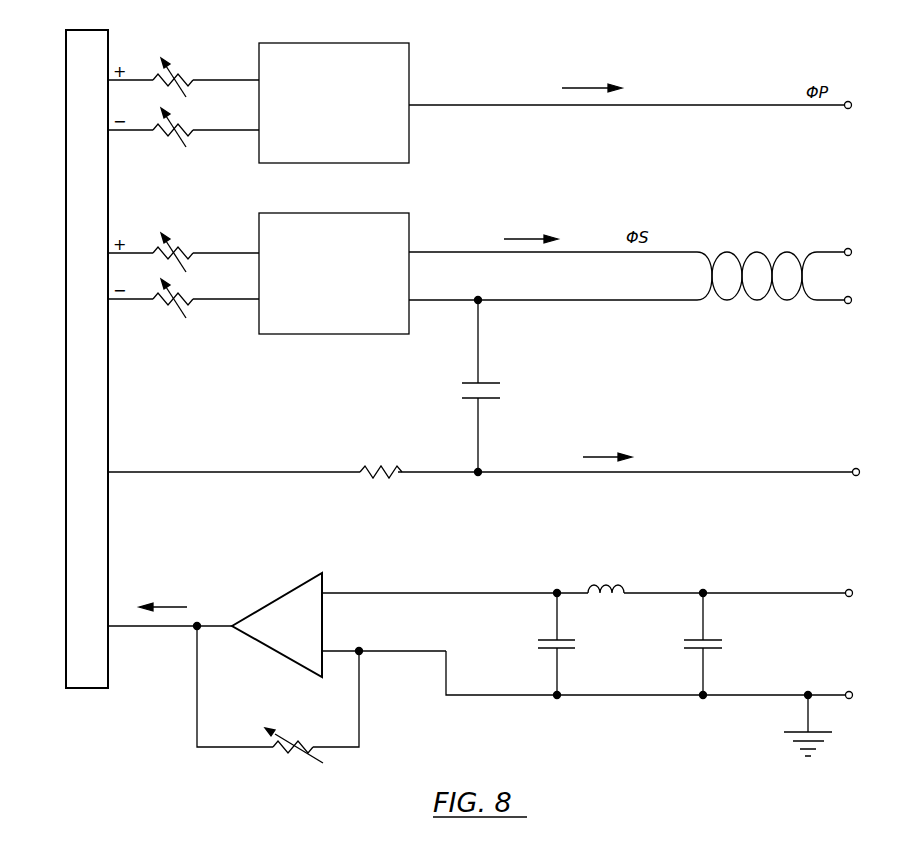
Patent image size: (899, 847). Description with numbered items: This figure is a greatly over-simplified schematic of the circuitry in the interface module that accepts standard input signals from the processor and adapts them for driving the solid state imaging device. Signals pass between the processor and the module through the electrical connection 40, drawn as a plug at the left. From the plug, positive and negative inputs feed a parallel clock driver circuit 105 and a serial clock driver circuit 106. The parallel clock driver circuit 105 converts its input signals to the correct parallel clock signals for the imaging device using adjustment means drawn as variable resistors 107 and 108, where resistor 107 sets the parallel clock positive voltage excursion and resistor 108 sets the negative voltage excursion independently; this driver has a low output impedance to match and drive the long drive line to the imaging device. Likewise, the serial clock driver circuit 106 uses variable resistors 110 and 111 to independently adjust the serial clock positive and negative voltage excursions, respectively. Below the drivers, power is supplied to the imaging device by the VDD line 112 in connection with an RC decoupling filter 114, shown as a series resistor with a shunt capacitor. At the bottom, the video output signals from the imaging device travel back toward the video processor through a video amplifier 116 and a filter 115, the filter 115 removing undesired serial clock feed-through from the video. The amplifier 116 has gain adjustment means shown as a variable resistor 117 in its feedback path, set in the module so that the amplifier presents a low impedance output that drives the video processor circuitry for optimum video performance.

The electrical connection 40 is at (75, 352).
The parallel clock driver circuit 105 is at (370, 50).
The serial clock driver circuit 106 is at (323, 335).
The variable resistor 107 is at (187, 75).
The variable resistor 108 is at (170, 134).
The variable resistor 110 is at (178, 250).
The variable resistor 111 is at (166, 305).
The VDD line 112 is at (696, 472).
The RC decoupling filter 114 is at (470, 399).
The filter 115 is at (650, 667).
The video amplifier 116 is at (279, 598).
The variable resistor 117 is at (287, 752).